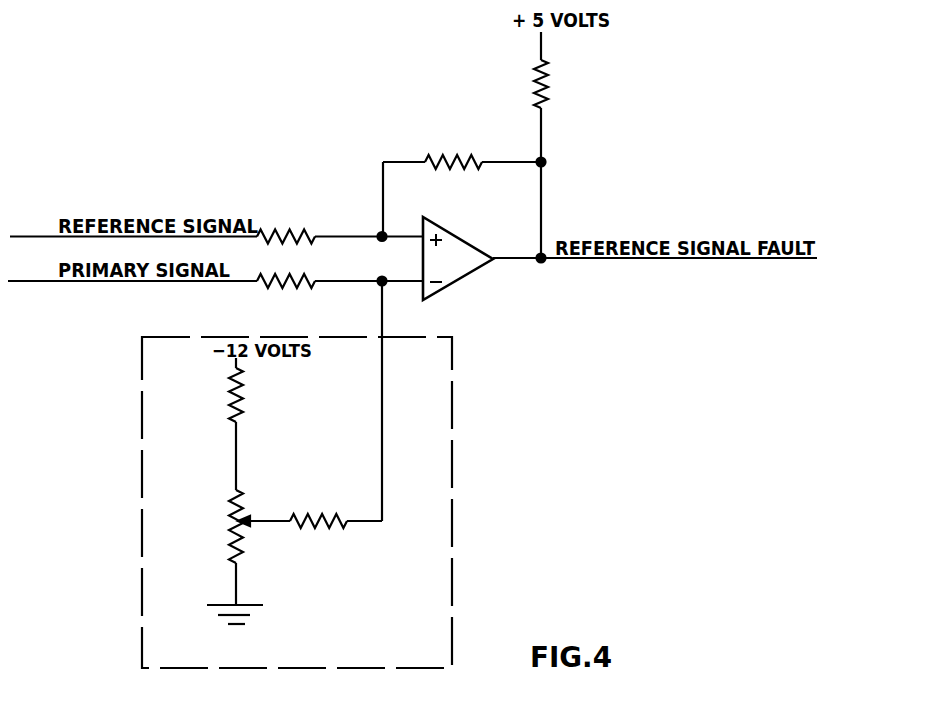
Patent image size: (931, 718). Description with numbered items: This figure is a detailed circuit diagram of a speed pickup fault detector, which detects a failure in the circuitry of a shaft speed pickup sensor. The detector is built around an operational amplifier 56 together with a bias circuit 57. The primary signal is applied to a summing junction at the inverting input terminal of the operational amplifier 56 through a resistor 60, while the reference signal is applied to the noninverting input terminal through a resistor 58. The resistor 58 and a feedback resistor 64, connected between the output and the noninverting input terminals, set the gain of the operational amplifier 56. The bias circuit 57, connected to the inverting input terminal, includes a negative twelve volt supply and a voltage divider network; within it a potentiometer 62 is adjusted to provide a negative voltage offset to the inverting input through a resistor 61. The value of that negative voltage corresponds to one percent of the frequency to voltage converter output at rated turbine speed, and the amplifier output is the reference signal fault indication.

The operational amplifier 56 is at (467, 236).
The bias circuit 57 is at (452, 482).
The resistor 58 is at (289, 234).
The resistor 60 is at (280, 286).
The resistor 61 is at (328, 519).
The potentiometer 62 is at (234, 522).
The feedback resistor 64 is at (480, 160).